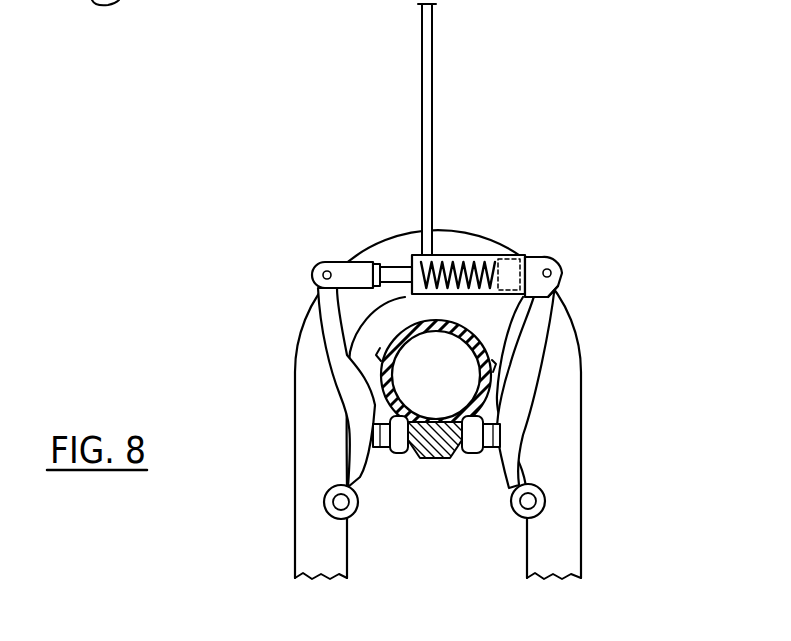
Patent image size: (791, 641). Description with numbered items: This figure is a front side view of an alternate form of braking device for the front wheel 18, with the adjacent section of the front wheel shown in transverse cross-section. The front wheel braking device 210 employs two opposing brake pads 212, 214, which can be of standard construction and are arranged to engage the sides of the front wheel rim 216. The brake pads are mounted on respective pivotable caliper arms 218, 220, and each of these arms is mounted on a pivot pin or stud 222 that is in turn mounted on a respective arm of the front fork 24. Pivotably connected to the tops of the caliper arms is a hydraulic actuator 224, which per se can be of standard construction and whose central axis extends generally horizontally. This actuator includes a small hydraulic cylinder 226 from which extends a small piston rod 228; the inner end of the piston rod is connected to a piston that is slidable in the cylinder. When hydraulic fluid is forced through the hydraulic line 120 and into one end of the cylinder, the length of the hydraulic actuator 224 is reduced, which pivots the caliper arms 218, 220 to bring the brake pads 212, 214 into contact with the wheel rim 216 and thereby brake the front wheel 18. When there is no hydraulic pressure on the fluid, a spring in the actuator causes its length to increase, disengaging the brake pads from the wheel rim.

The front wheel 18 is at (493, 396).
The front fork 24 is at (313, 434).
The hydraulic line 120 is at (431, 137).
The front wheel braking device 210 is at (553, 297).
The brake pad 212 is at (402, 450).
The brake pad 214 is at (474, 450).
The front wheel rim 216 is at (438, 458).
The caliper arm 218 is at (337, 355).
The caliper arm 220 is at (539, 338).
The pivot pin 222 is at (340, 495).
The hydraulic actuator 224 is at (503, 255).
The hydraulic cylinder 226 is at (463, 255).
The piston rod 228 is at (397, 271).